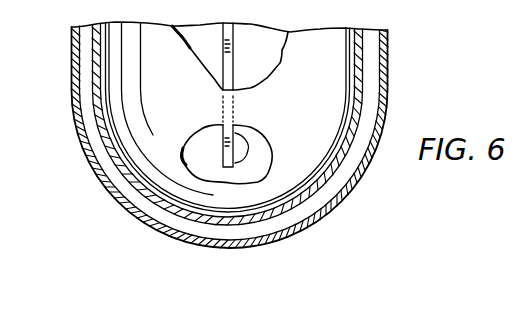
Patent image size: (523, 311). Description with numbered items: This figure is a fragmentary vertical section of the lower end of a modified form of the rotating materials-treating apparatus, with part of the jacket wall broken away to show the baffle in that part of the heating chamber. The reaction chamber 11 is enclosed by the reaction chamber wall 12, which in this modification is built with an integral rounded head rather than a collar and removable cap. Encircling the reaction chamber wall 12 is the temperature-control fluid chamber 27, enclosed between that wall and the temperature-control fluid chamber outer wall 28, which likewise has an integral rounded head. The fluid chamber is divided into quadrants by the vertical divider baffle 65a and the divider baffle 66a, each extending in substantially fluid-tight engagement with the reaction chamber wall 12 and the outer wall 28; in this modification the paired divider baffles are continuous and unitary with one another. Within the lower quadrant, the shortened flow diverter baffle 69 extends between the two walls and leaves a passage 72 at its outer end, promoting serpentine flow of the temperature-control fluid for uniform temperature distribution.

The reaction chamber 11 is at (312, 102).
The reaction chamber wall 12 is at (110, 152).
The temperature-control fluid chamber 27 is at (263, 59).
The temperature-control fluid chamber outer wall 28 is at (357, 177).
The vertical divider baffle 65a is at (372, 70).
The divider baffle 66a is at (85, 87).
The flow diverter baffle 69 is at (241, 95).
The passage 72 is at (241, 154).